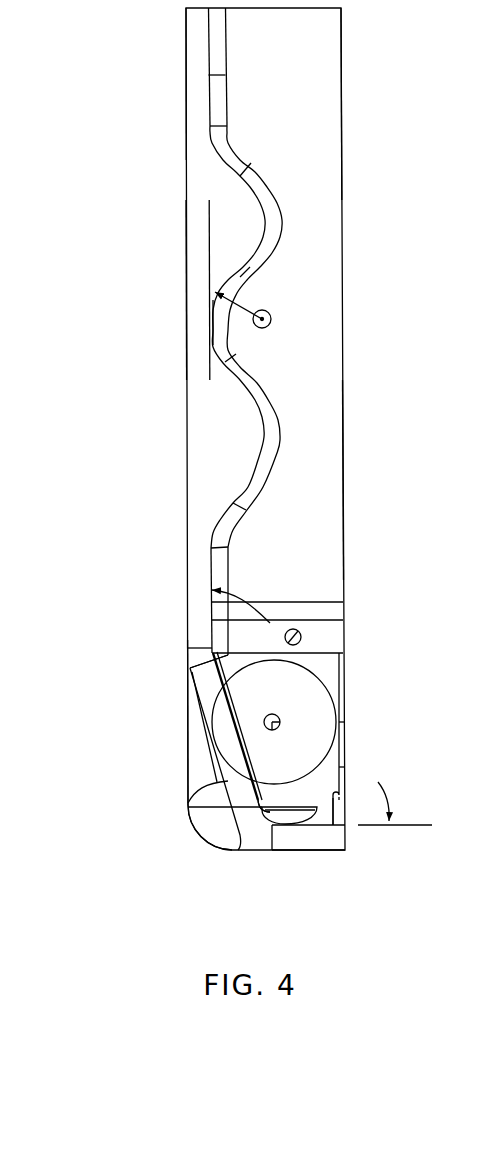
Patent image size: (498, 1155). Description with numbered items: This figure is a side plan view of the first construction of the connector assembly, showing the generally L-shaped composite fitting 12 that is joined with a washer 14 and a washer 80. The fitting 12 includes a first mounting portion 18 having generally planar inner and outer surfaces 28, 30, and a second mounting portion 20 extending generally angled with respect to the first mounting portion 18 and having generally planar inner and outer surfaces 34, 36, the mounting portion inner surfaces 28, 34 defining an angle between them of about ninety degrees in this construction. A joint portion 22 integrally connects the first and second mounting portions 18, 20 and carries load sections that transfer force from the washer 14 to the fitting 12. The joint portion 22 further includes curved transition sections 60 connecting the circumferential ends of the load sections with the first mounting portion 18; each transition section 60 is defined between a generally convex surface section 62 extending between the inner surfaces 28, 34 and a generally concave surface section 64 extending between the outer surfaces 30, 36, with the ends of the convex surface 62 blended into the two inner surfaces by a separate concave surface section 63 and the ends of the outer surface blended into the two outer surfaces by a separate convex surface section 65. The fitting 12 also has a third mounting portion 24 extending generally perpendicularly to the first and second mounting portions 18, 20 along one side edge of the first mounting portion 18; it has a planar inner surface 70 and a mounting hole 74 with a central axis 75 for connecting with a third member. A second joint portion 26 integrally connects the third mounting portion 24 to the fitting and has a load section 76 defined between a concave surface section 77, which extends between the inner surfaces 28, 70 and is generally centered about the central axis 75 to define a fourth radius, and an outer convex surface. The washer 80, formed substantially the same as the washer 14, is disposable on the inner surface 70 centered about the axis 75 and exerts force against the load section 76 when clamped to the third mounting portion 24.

The fitting 12 is at (117, 432).
The washer 14 is at (312, 795).
The first mounting portion 18 is at (163, 285).
The second mounting portion 20 is at (298, 856).
The joint portion 22 is at (186, 689).
The third mounting portion 24 is at (350, 486).
The second joint portion 26 is at (284, 232).
The inner surface of first mounting portion 28 is at (210, 75).
The outer surface of first mounting portion 30 is at (186, 100).
The inner surface of second mounting portion 34 is at (349, 796).
The outer surface of second mounting portion 36 is at (325, 850).
The transition section 60 is at (200, 738).
The convex surface section 62 is at (248, 755).
The concave surface section 63 is at (213, 658).
The concave surface section 64 is at (216, 760).
The convex surface section 65 is at (190, 662).
The inner surface of third mounting portion 70 is at (317, 122).
The mounting hole of third mounting portion 74 is at (268, 312).
The central axis of third portion mounting hole 75 is at (273, 319).
The load section of second joint portion 76 is at (211, 322).
The concave surface section of second joint portion 77 is at (232, 346).
The washer 80 is at (326, 699).